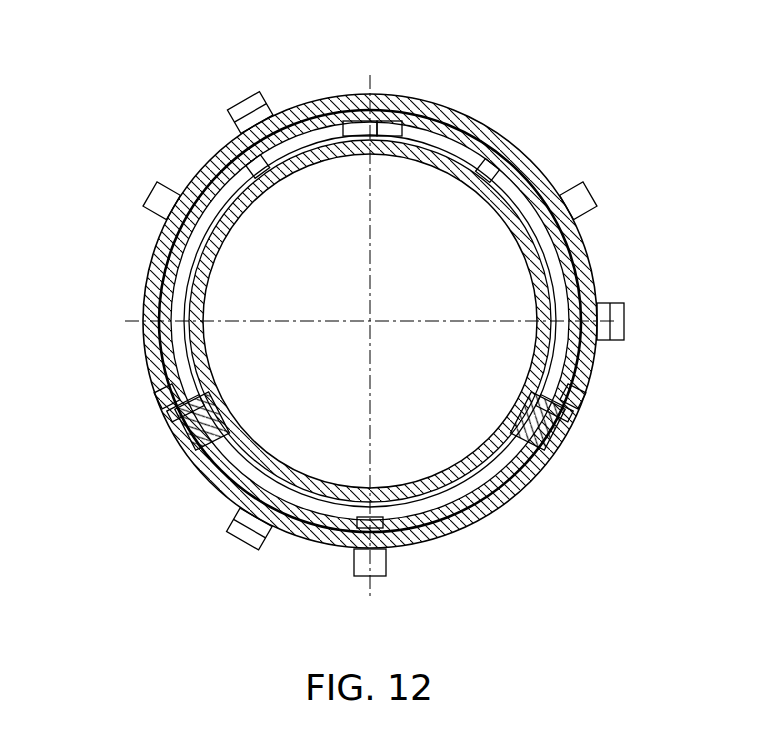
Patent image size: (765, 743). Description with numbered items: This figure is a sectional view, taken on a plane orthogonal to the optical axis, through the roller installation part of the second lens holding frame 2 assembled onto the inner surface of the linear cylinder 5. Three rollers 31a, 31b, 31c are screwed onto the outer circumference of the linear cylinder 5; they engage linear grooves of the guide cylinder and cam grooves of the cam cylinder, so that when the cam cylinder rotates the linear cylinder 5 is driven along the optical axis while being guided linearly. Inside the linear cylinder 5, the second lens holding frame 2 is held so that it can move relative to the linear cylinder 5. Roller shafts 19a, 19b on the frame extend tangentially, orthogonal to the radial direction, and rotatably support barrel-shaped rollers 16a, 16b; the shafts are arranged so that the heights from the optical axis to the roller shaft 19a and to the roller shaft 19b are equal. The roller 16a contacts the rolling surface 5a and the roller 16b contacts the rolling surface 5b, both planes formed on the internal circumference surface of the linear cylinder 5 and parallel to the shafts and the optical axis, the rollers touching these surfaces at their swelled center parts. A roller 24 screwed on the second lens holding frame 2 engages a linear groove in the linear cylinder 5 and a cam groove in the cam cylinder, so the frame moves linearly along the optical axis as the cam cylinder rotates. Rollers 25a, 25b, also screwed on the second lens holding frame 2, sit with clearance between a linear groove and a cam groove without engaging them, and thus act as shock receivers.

The second lens holding frame 2 is at (536, 504).
The linear cylinder 5 is at (513, 140).
The rolling surface 5a is at (183, 455).
The rolling surface 5b is at (553, 460).
The roller 16a is at (167, 420).
The roller 16b is at (580, 420).
The roller shaft 19a is at (160, 395).
The roller shaft 19b is at (578, 391).
The roller 24 is at (390, 577).
The roller 25a is at (150, 210).
The roller 25b is at (596, 204).
The roller 31a is at (625, 300).
The roller 31b is at (263, 96).
The roller 31c is at (260, 552).